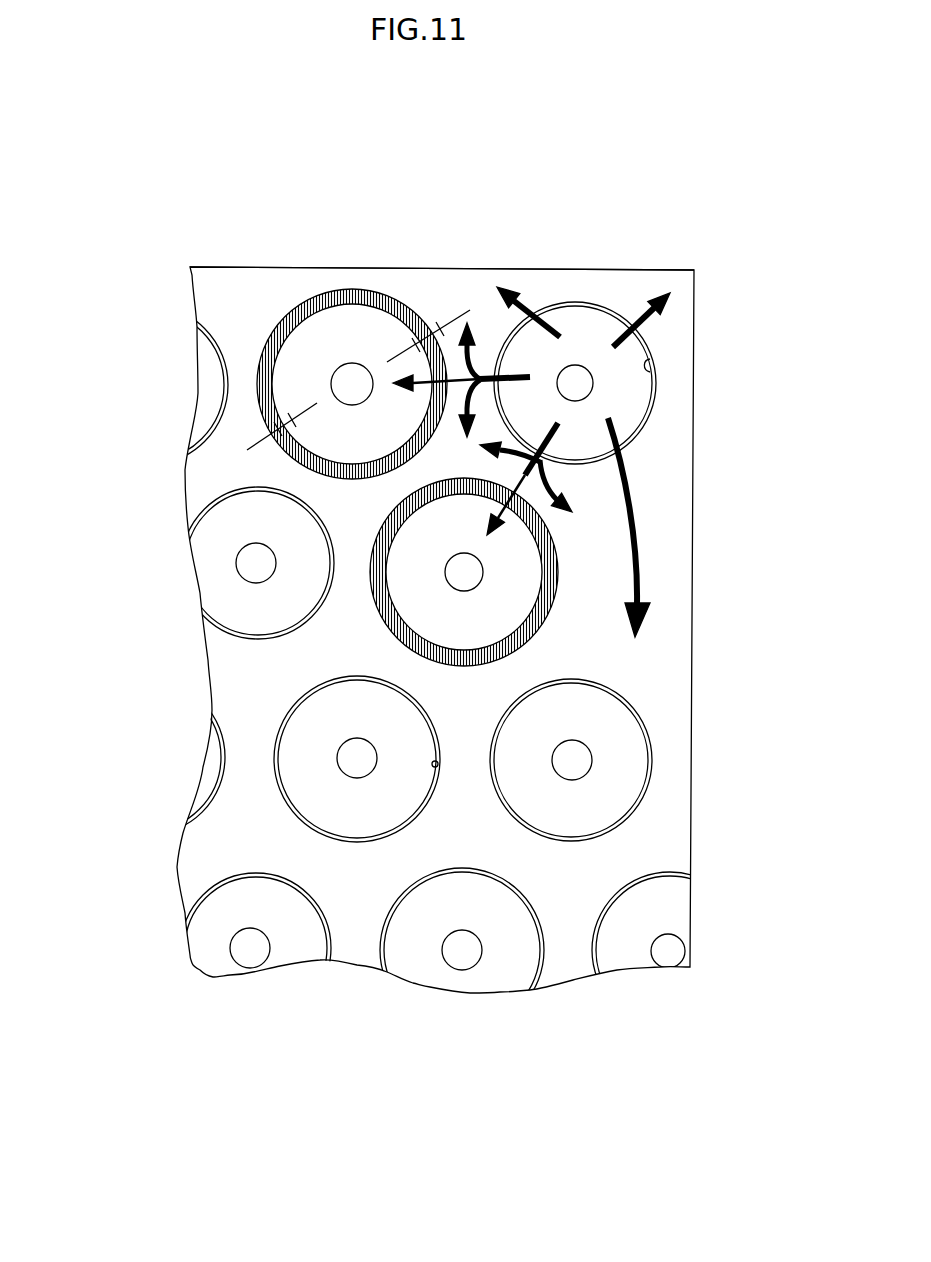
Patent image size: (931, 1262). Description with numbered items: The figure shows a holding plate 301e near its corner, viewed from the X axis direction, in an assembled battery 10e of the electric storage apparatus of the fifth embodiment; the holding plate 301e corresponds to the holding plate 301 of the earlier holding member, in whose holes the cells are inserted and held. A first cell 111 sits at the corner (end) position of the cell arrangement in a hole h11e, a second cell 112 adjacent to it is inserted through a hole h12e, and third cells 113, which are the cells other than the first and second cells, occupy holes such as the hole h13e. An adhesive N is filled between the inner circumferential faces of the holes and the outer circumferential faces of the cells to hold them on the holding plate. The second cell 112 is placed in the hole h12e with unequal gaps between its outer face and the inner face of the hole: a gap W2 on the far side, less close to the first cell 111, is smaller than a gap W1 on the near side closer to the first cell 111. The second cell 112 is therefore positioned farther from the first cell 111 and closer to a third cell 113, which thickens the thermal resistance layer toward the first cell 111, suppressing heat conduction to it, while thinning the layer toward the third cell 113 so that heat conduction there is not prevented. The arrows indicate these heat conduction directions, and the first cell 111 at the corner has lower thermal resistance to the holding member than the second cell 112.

The assembled battery 10e is at (556, 225).
The holding plate 301e is at (473, 272).
The holding plate 301 is at (313, 815).
The first cell 111 is at (635, 411).
The second cell 112 is at (332, 338).
The third cell 113 is at (212, 397).
The hole h11e is at (655, 365).
The hole h12e is at (270, 350).
The hole h13e is at (437, 768).
The adhesive N is at (290, 333).
The gap W1 is at (428, 328).
The gap W2 is at (272, 426).